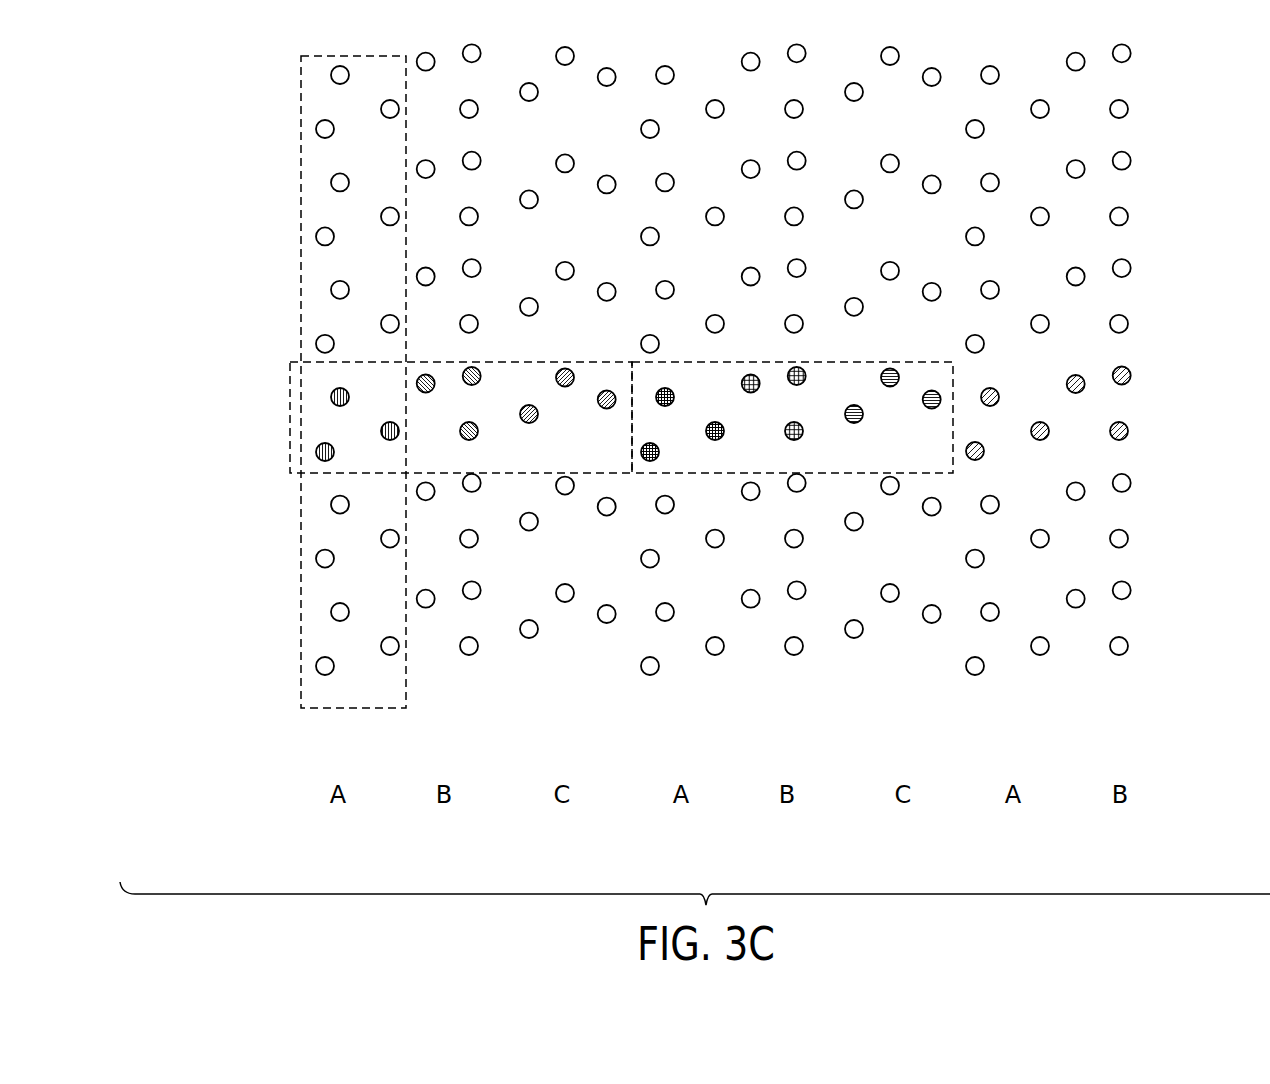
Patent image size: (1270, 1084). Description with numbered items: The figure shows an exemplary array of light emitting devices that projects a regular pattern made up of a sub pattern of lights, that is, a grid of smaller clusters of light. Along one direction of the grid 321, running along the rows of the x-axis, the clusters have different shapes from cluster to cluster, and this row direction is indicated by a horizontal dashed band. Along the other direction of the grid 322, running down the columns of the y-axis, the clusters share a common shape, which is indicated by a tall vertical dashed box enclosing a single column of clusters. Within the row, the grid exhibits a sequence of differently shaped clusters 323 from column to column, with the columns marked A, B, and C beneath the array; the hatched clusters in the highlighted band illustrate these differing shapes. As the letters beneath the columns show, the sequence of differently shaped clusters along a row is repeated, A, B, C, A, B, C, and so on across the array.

The direction of the grid with differently shaped clusters 321 is at (290, 412).
The direction of the grid with commonly shaped clusters 322 is at (323, 711).
The sequence of differently shaped clusters 323 is at (953, 388).